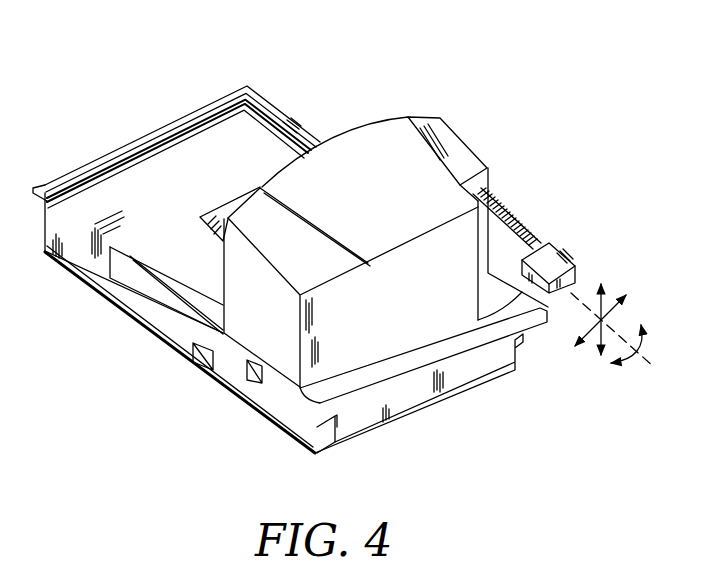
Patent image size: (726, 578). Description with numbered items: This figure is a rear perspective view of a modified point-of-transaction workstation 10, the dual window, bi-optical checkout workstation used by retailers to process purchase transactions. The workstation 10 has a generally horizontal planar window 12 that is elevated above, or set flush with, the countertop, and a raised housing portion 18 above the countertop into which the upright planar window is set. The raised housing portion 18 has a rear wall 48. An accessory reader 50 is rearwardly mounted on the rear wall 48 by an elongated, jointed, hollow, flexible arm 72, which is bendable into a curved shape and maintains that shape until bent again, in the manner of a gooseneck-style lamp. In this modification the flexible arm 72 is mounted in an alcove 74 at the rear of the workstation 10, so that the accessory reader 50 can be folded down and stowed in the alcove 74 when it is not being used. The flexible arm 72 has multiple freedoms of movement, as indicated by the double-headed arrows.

The point-of-transaction workstation 10 is at (335, 62).
The horizontal planar window 12 is at (240, 204).
The raised housing portion 18 is at (285, 347).
The rear wall 48 is at (377, 337).
The accessory reader 50 is at (576, 251).
The flexible arm 72 is at (524, 220).
The alcove 74 is at (481, 177).